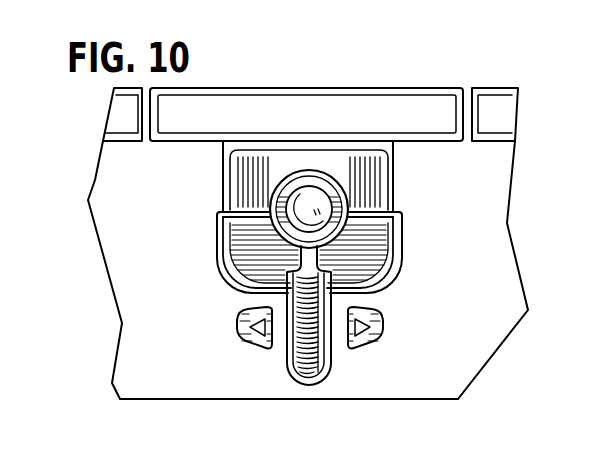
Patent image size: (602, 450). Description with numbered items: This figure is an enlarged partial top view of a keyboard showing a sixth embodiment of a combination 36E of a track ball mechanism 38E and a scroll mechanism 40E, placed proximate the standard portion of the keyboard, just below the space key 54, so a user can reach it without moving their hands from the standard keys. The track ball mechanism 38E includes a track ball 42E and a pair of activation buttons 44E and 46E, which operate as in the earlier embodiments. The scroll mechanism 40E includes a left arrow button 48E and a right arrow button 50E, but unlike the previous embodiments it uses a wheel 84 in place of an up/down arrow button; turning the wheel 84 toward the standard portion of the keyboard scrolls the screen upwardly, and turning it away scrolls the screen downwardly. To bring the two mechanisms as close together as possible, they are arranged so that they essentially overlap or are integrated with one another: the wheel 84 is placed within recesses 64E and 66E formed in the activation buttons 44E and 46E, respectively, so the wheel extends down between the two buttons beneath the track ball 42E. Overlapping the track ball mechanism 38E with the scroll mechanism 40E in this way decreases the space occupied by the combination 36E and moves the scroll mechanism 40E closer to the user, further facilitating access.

The space key 54 is at (422, 88).
The combination 36E is at (172, 342).
The track ball mechanism 38E is at (472, 265).
The scroll mechanism 40E is at (447, 325).
The track ball 42E is at (322, 198).
The activation button 44E is at (232, 234).
The activation button 46E is at (392, 238).
The recess 64E is at (240, 292).
The recess 66E is at (440, 278).
The left arrow button 48E is at (246, 342).
The right arrow button 50E is at (378, 342).
The wheel 84 is at (310, 384).